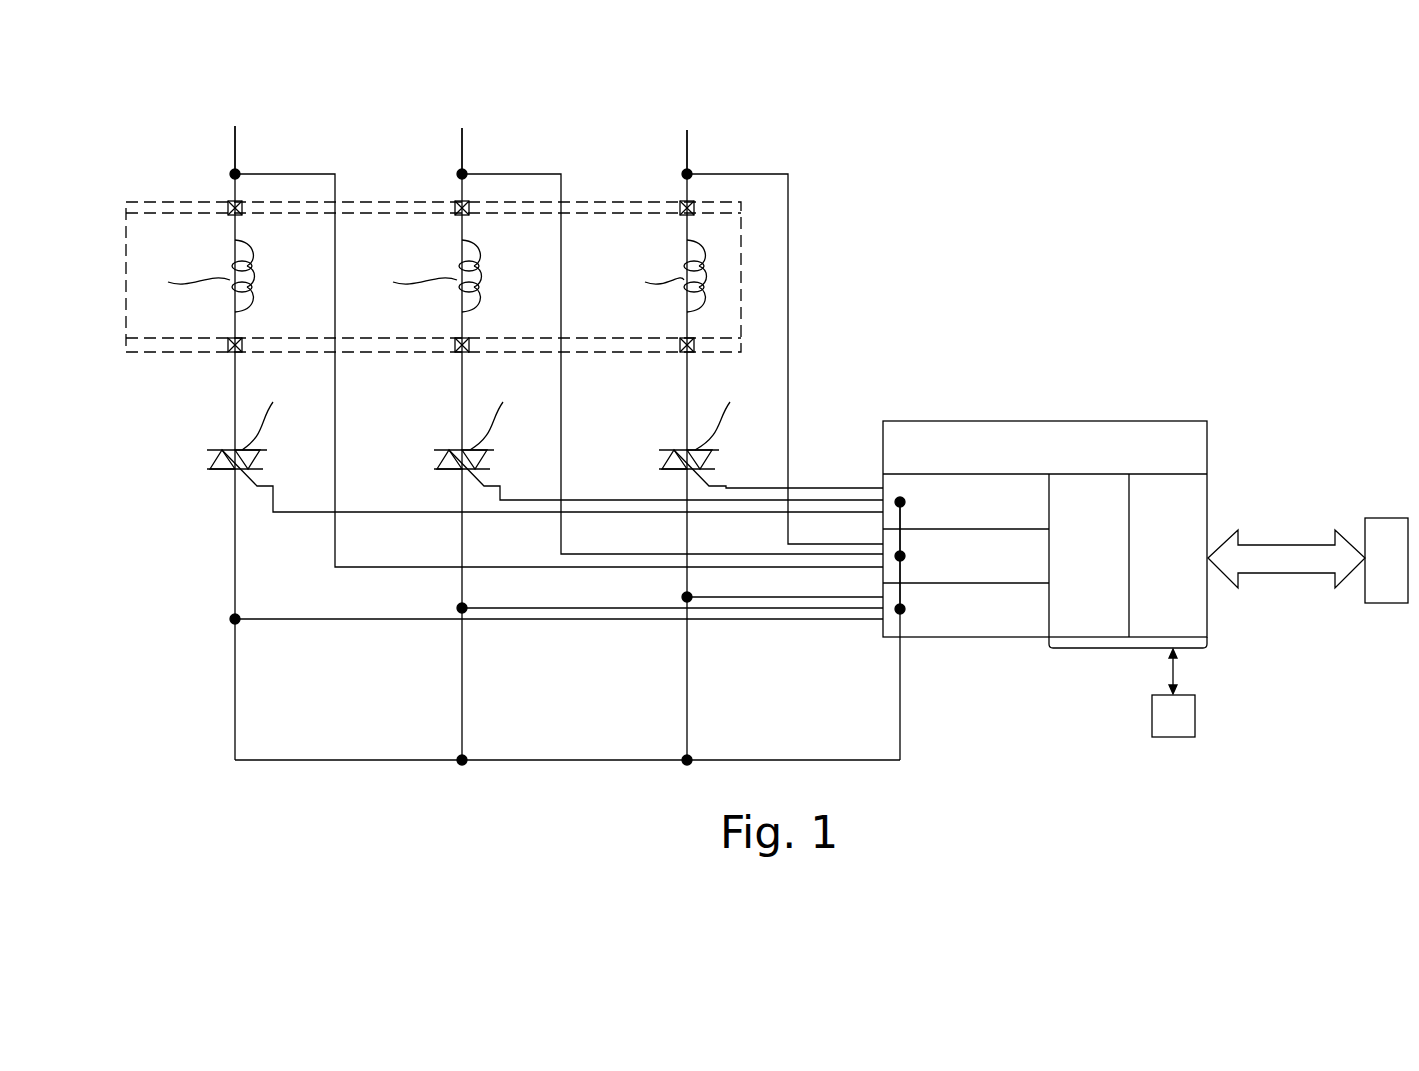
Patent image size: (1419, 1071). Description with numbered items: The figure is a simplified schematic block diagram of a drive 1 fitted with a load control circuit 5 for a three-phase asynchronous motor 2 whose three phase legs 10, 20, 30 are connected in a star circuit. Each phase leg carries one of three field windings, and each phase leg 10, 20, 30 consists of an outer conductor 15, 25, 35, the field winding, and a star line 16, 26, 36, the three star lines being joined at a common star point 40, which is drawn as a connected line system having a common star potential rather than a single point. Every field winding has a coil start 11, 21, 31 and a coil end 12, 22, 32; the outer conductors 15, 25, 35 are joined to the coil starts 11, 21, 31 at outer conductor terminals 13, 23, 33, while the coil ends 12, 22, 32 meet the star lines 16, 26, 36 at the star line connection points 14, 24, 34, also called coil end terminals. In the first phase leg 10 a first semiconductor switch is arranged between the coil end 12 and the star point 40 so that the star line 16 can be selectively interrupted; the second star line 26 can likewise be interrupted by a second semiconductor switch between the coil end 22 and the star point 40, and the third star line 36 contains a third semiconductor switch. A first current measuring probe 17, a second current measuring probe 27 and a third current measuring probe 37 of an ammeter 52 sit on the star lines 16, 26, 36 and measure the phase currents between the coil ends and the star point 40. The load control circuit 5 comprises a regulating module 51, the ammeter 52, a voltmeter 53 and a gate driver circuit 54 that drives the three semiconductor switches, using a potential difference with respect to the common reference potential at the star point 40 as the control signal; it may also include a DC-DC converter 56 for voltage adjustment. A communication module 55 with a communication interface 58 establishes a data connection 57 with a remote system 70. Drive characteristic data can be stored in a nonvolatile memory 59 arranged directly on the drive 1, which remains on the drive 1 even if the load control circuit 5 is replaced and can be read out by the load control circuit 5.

The drive 1 is at (1120, 298).
The three-phase asynchronous motor 2 is at (630, 235).
The load control circuit 5 is at (1045, 488).
The first phase leg 10 is at (226, 136).
The coil start of first field winding 11 is at (233, 246).
The coil end of first field winding 12 is at (233, 310).
The first outer conductor terminal 13 is at (233, 205).
The first star line connection point 14 is at (232, 352).
The first outer conductor 15 is at (238, 152).
The first star line 16 is at (234, 410).
The first current measuring probe 17 is at (334, 283).
The second phase leg 20 is at (451, 136).
The coil start of second field winding 21 is at (460, 246).
The coil end of second field winding 22 is at (460, 310).
The second outer conductor terminal 23 is at (460, 205).
The second star line connection point 24 is at (459, 352).
The second outer conductor 25 is at (465, 152).
The second star line 26 is at (461, 410).
The second current measuring probe 27 is at (560, 283).
The third phase leg 30 is at (676, 136).
The coil start of third field winding 31 is at (685, 246).
The coil end of third field winding 32 is at (685, 310).
The third outer conductor terminal 33 is at (685, 205).
The third coil end terminal 34 is at (684, 352).
The third outer conductor 35 is at (690, 152).
The third star line 36 is at (686, 410).
The third current measuring probe 37 is at (790, 272).
The star point 40 is at (290, 762).
The regulating module 51 is at (1076, 555).
The ammeter 52 is at (938, 564).
The voltmeter 53 is at (966, 562).
The gate driver circuit 54 is at (966, 508).
The communication module 55 is at (1158, 555).
The DC-DC converter 56 is at (1045, 454).
The data connection 57 is at (1308, 556).
The communication interface 58 is at (1225, 512).
The nonvolatile memory 59 is at (1173, 693).
The remote system 70 is at (1386, 560).